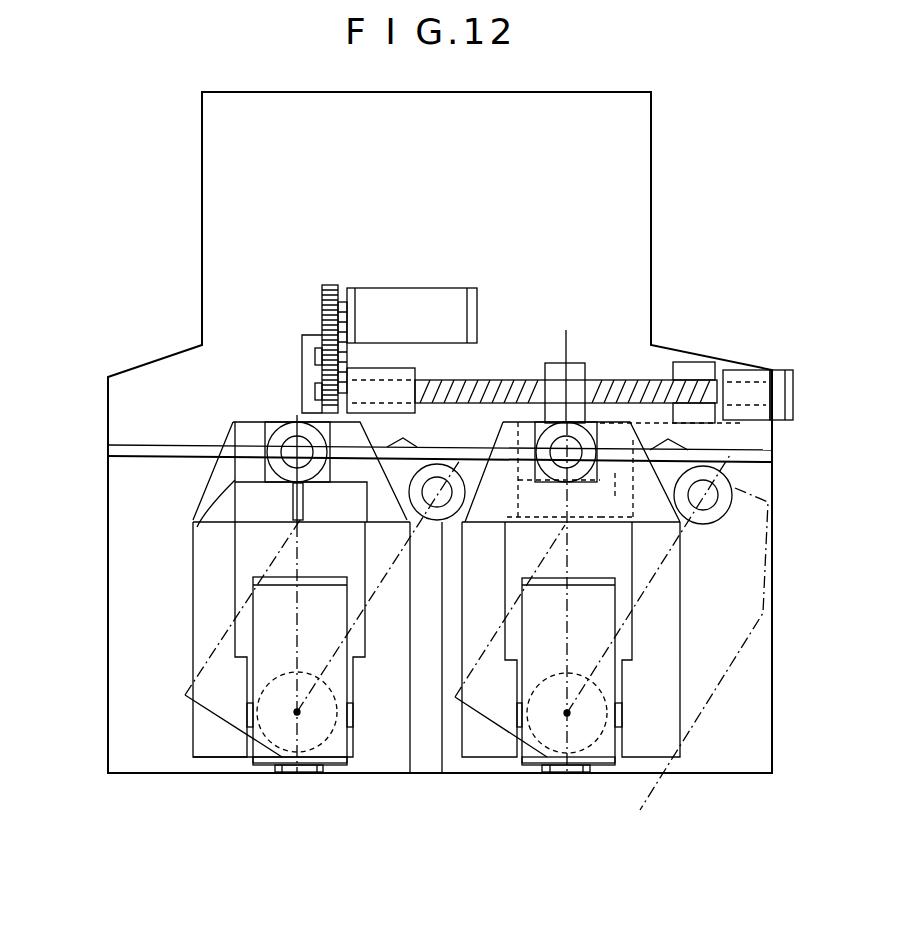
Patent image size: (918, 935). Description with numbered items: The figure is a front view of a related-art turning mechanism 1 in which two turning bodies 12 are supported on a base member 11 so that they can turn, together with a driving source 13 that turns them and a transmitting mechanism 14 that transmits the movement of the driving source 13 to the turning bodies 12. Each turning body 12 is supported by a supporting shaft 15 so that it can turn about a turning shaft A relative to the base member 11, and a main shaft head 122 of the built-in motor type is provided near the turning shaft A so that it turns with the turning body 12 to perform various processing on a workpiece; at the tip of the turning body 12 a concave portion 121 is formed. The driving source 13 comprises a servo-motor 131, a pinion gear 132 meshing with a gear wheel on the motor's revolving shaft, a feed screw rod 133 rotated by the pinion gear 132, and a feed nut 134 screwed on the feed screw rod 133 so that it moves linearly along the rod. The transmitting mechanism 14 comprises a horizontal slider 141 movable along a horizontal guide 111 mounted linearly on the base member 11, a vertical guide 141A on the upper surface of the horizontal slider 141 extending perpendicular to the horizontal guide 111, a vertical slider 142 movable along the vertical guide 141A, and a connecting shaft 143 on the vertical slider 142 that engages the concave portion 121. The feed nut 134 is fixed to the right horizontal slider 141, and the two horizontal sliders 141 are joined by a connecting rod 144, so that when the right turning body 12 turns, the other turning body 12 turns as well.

The turning mechanism 1 is at (128, 203).
The base member 11 is at (638, 213).
The horizontal guide 111 is at (774, 456).
The turning body 12 is at (207, 598).
The concave portion 121 is at (257, 422).
The main shaft head 122 is at (268, 670).
The driving source 13 is at (563, 193).
The servo-motor 131 is at (400, 288).
The pinion gear 132 is at (322, 343).
The feed screw rod 133 is at (492, 380).
The feed nut 134 is at (585, 363).
The transmitting mechanism 14 is at (66, 222).
The horizontal slider 141 is at (247, 493).
The vertical guide 141A is at (197, 527).
The vertical slider 142 is at (263, 453).
The connecting shaft 143 is at (245, 455).
The connecting rod 144 is at (437, 774).
The supporting shaft 15 is at (287, 750).
The turning shaft A is at (297, 713).